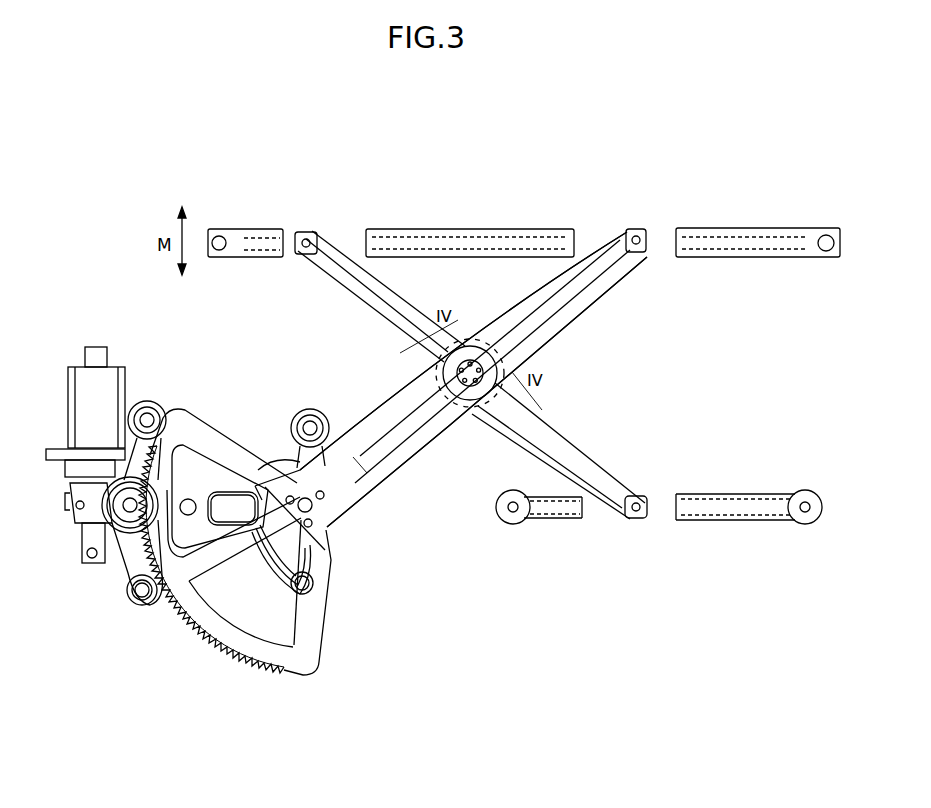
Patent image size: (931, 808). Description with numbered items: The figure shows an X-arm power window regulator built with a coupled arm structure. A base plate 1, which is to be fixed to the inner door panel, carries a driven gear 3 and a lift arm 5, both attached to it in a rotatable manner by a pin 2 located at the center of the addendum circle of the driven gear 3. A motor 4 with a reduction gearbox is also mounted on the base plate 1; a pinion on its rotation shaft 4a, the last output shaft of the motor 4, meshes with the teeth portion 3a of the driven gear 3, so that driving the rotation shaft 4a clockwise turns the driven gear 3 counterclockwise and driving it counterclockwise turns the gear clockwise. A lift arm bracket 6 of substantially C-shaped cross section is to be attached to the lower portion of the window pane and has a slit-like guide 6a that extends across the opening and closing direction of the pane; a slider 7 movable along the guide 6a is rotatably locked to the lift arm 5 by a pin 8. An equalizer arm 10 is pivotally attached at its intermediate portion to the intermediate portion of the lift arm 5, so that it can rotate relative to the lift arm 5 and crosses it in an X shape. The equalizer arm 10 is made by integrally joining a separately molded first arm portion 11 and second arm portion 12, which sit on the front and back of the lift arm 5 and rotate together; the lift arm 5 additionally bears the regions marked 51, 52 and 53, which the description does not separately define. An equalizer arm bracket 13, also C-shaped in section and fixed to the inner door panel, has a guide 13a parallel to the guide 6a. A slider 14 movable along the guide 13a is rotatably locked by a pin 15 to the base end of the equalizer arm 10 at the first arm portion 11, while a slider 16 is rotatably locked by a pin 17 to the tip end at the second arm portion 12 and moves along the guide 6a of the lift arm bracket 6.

The base plate 1 is at (193, 468).
The pin 2 is at (315, 512).
The driven gear 3 is at (310, 620).
The teeth portion 3a is at (232, 660).
The motor 4 is at (110, 387).
The rotation shaft 4a is at (151, 427).
The lift arm 5 is at (403, 475).
The lift arm bracket 6 is at (462, 228).
The guide 6a is at (486, 242).
The slider 7 is at (642, 250).
The pin 8 is at (636, 254).
The equalizer arm 10 is at (589, 345).
The first arm portion 11 is at (549, 400).
The second arm portion 12 is at (487, 335).
The equalizer arm bracket 13 is at (707, 519).
The guide 13a is at (768, 493).
The slider 14 is at (634, 520).
The pin 15 is at (640, 500).
The slider 16 is at (312, 237).
The pin 17 is at (307, 232).
The arm center rib 51 is at (420, 420).
The arm upper flange 52 is at (357, 423).
The arm lower flange 53 is at (430, 447).